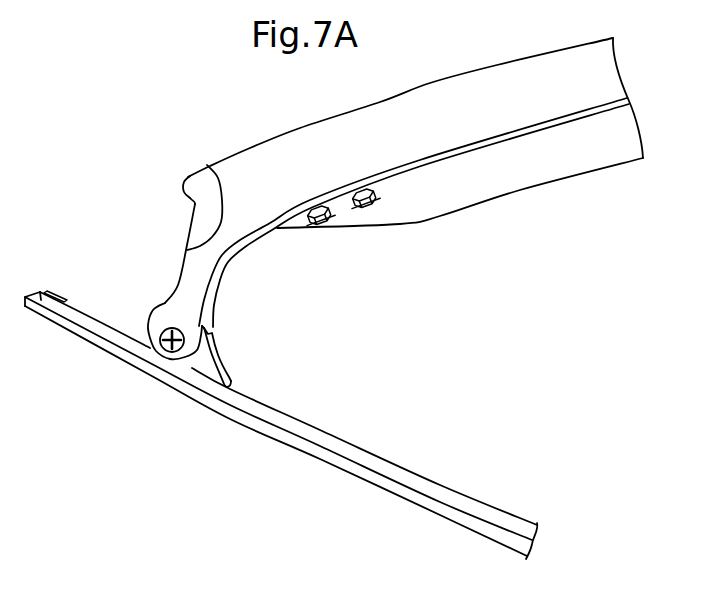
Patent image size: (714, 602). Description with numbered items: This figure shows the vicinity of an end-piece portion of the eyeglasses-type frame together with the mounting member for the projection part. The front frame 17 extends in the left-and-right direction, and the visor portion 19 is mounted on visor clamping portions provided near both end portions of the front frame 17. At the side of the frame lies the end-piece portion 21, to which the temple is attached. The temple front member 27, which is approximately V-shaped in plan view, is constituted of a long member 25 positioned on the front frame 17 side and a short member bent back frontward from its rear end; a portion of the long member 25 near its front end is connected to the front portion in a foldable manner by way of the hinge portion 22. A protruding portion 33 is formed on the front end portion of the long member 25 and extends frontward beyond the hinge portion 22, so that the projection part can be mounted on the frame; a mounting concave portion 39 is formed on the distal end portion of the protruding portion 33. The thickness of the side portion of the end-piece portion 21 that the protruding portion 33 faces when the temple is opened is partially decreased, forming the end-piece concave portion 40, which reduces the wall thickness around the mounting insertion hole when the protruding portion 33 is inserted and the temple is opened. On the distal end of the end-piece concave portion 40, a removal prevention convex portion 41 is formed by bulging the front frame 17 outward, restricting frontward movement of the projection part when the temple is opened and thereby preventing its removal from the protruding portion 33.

The front frame 17 is at (478, 107).
The visor portion 19 is at (552, 165).
The end-piece portion 21 is at (230, 233).
The hinge portion 22 is at (248, 353).
The long member 25 is at (397, 492).
The temple front member 27 is at (328, 479).
The protruding portion 33 is at (73, 335).
The mounting concave portion 39 is at (55, 300).
The end-piece concave portion 40 is at (207, 165).
The removal prevention convex portion 41 is at (192, 186).